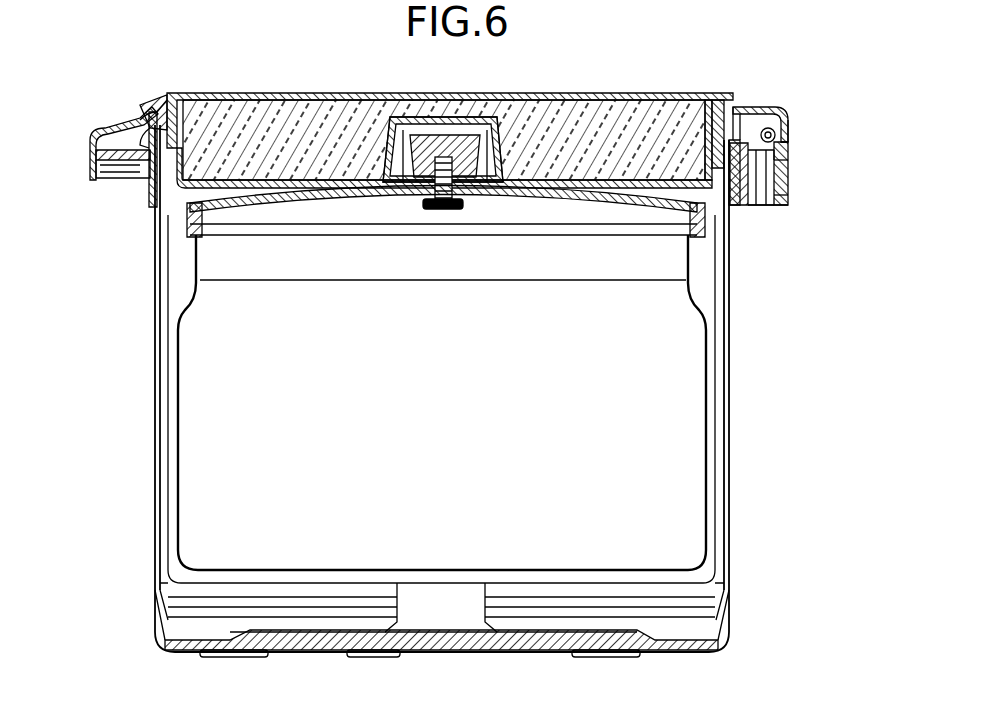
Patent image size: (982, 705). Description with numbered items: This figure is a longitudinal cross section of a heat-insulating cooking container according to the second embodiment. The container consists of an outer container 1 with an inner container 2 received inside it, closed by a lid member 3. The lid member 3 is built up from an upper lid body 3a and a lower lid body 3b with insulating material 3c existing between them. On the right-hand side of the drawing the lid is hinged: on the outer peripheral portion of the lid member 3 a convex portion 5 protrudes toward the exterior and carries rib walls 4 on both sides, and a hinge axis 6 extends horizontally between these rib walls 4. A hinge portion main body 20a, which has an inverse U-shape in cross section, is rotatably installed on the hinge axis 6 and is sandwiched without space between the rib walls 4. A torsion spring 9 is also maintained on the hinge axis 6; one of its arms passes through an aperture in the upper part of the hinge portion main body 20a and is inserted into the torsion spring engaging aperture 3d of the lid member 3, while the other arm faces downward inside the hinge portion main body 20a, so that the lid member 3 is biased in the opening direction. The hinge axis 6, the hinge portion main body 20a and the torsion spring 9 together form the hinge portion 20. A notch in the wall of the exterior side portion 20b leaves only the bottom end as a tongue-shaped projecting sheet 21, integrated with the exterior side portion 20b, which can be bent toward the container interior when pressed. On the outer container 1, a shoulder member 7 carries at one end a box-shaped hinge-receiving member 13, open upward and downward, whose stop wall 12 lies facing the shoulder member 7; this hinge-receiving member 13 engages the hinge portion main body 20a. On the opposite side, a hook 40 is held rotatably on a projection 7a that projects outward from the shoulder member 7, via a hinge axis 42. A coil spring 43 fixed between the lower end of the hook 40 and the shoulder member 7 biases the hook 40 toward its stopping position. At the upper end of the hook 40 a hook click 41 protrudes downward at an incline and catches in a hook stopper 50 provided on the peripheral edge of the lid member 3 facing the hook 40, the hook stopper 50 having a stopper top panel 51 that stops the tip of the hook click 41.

The outer container 1 is at (733, 343).
The inner container 2 is at (706, 297).
The lid member 3 is at (450, 130).
The upper lid body 3a is at (253, 95).
The lower lid body 3b is at (300, 165).
The insulating material 3c is at (359, 125).
The torsion spring engaging aperture 3d is at (733, 118).
The rib wall 4 is at (753, 110).
The convex portion 5 is at (766, 99).
The hinge axis 6 is at (789, 163).
The shoulder member 7 is at (153, 205).
The projection 7a is at (133, 130).
The torsion spring 9 is at (778, 131).
The stop wall 12 is at (790, 204).
The hinge-receiving member 13 is at (791, 229).
The hinge portion 20 is at (795, 102).
The hinge portion main body 20a is at (800, 136).
The exterior side portion 20b is at (786, 143).
The projecting sheet 21 is at (767, 207).
The hook 40 is at (93, 140).
The hook click 41 is at (145, 118).
The hinge axis 42 is at (125, 183).
The coil spring 43 is at (110, 177).
The hook stopper 50 is at (169, 92).
The stopper top panel 51 is at (147, 127).